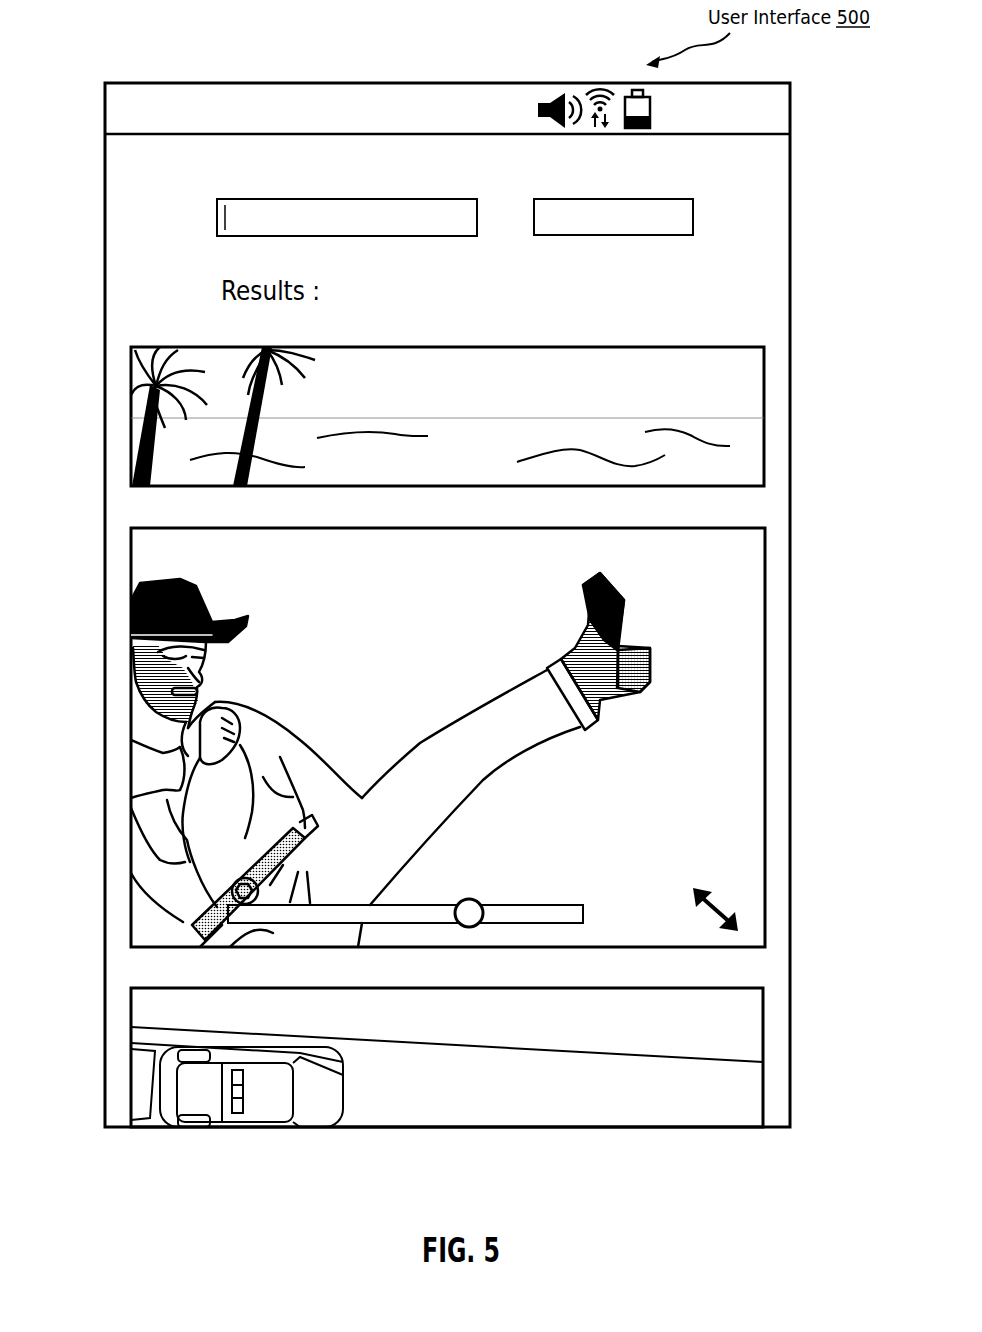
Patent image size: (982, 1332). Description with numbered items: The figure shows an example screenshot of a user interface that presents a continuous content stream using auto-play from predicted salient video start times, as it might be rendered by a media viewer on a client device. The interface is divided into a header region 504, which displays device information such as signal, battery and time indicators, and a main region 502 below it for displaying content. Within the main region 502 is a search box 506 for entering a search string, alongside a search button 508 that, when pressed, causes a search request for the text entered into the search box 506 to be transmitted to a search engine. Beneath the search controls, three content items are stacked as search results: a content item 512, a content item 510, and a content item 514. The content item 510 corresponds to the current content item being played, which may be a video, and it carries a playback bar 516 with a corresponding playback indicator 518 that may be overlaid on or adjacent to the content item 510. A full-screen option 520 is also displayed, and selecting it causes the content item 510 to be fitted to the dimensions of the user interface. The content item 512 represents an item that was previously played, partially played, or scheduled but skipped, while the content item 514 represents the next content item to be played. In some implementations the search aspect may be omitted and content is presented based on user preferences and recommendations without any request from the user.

The main region 502 is at (150, 238).
The header region 504 is at (783, 108).
The search box 506 is at (308, 212).
The search button 508 is at (610, 236).
The content item 510 is at (498, 760).
The content item 512 is at (755, 375).
The content item 514 is at (755, 1012).
The playback bar 516 is at (545, 905).
The playback indicator 518 is at (478, 926).
The full-screen option 520 is at (690, 891).